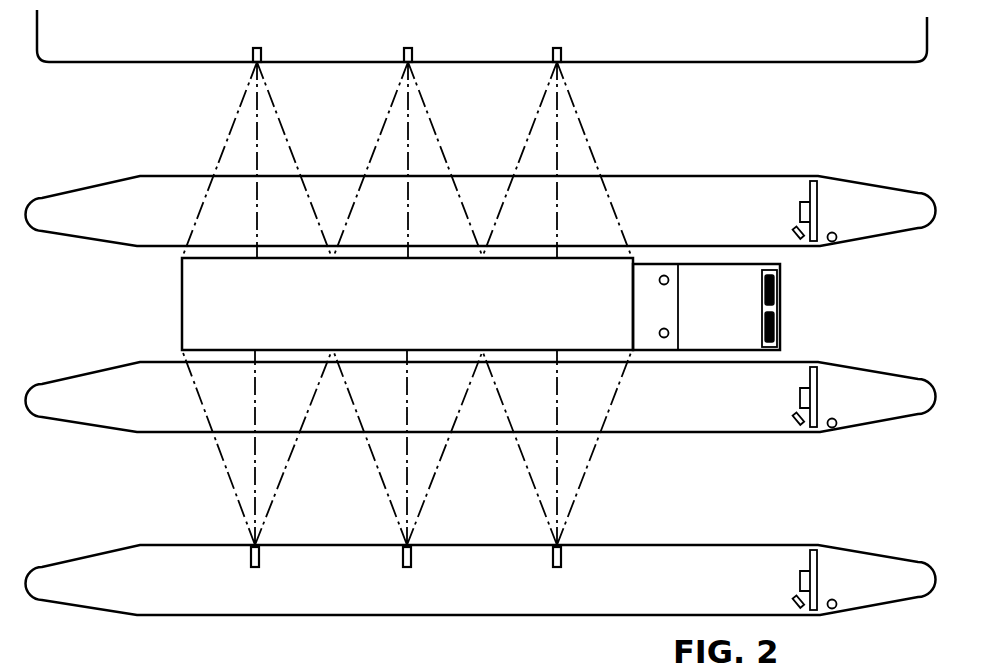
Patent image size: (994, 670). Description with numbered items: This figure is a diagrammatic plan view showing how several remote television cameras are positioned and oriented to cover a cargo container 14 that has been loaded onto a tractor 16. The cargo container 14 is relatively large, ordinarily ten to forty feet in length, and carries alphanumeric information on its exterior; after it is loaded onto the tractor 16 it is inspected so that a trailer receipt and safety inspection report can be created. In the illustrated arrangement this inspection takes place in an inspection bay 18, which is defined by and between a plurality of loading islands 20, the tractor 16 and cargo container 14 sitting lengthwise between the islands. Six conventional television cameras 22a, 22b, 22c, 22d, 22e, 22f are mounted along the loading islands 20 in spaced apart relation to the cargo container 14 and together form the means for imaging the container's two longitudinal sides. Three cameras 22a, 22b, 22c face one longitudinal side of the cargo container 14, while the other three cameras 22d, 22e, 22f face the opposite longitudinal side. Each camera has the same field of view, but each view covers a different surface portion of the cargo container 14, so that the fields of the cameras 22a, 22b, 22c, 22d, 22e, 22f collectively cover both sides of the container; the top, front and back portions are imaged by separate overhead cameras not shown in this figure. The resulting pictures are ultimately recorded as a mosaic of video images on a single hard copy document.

The cargo container 14 is at (413, 313).
The tractor 16 is at (727, 313).
The inspection bay 18 is at (118, 313).
The loading islands 20 is at (682, 221).
The television camera 22a is at (257, 48).
The television camera 22b is at (408, 48).
The television camera 22c is at (557, 48).
The television camera 22d is at (255, 567).
The television camera 22e is at (407, 567).
The television camera 22f is at (557, 567).